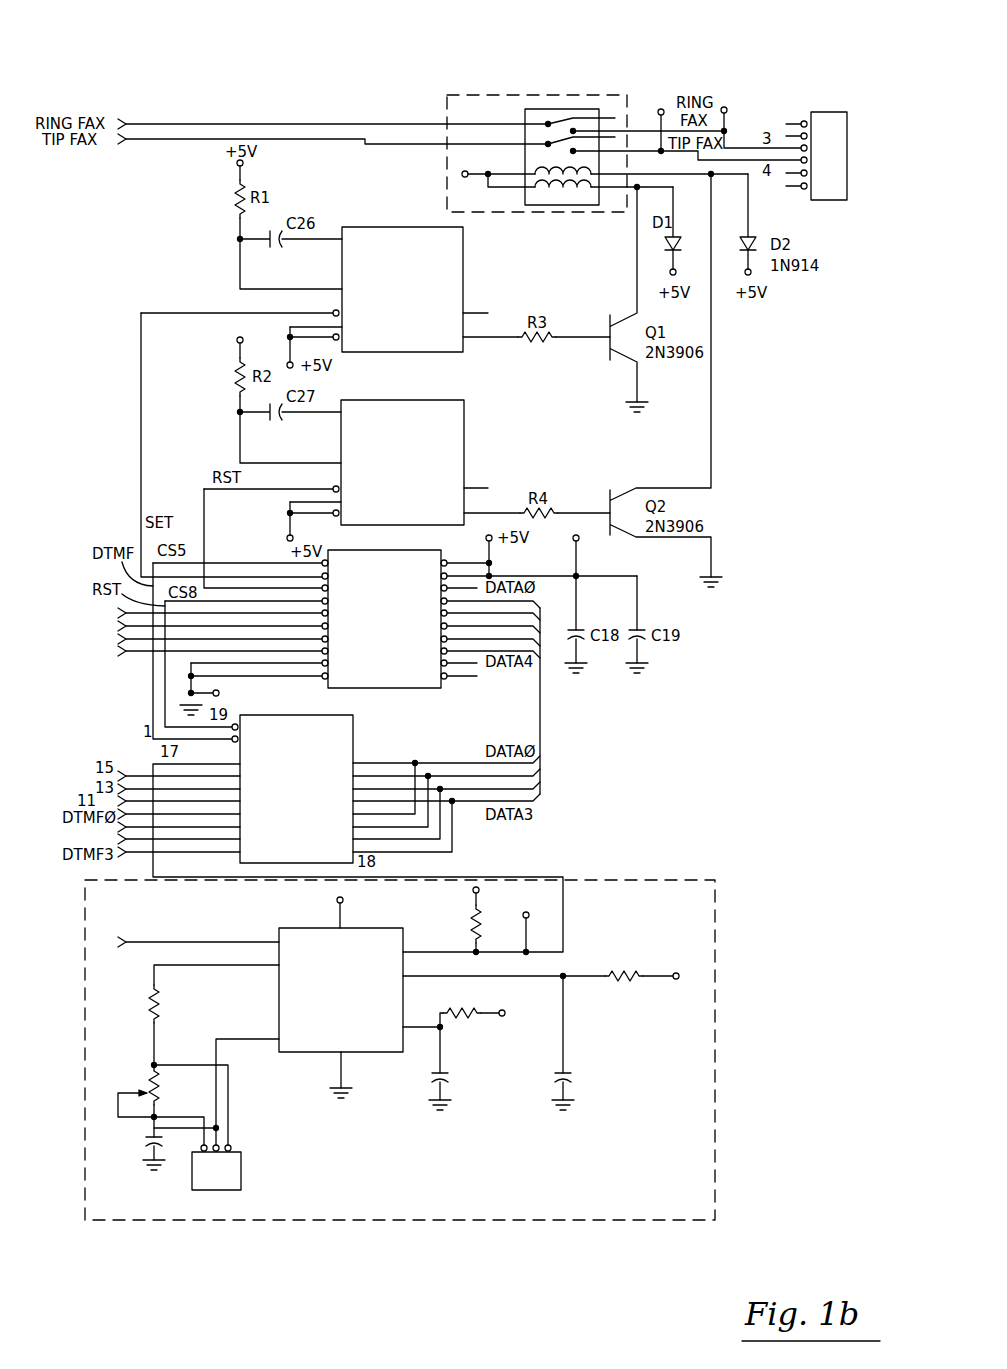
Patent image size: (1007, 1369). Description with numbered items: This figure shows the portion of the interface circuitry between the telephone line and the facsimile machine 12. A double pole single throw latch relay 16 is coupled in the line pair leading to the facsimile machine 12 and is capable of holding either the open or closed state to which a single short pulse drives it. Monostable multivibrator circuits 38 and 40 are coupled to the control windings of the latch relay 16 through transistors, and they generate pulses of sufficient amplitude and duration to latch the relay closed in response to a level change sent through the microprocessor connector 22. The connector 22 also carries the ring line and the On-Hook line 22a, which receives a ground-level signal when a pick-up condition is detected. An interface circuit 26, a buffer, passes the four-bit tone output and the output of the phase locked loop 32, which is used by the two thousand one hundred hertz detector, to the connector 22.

The facsimile machine 12 is at (843, 31).
The double pole single throw latch relay 16 is at (580, 91).
The monostable multivibrator circuit 38 is at (414, 217).
The monostable multivibrator circuit 40 is at (414, 393).
The microprocessor connector 22 is at (474, 711).
The On-Hook line 22a is at (186, 637).
The interface circuit 26 is at (386, 728).
The phase locked loop 32 is at (486, 1132).